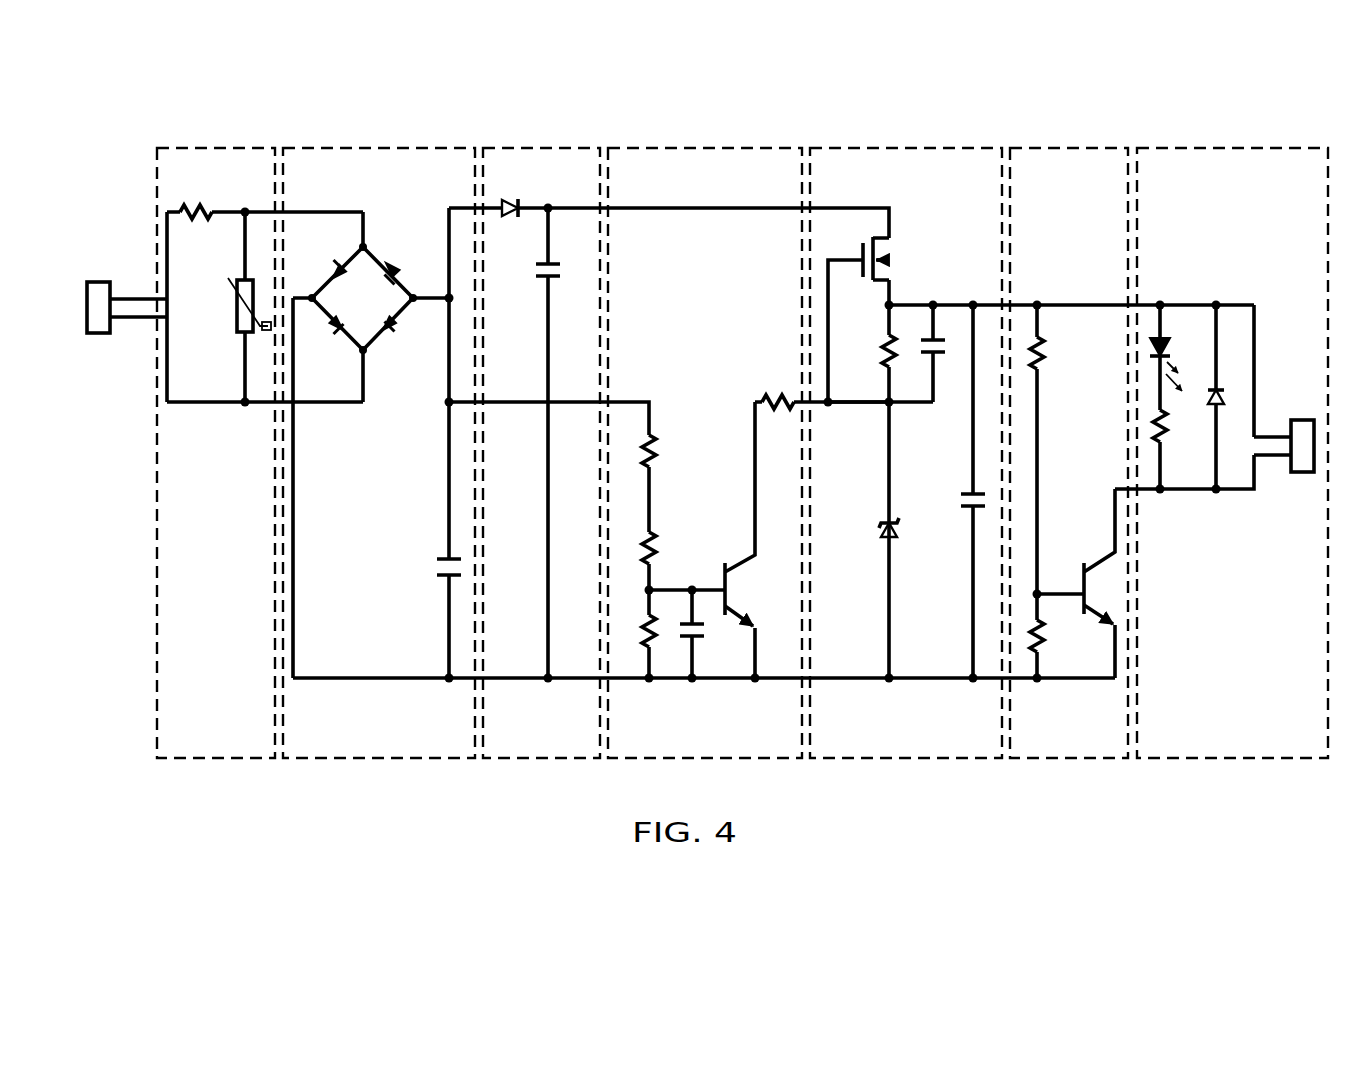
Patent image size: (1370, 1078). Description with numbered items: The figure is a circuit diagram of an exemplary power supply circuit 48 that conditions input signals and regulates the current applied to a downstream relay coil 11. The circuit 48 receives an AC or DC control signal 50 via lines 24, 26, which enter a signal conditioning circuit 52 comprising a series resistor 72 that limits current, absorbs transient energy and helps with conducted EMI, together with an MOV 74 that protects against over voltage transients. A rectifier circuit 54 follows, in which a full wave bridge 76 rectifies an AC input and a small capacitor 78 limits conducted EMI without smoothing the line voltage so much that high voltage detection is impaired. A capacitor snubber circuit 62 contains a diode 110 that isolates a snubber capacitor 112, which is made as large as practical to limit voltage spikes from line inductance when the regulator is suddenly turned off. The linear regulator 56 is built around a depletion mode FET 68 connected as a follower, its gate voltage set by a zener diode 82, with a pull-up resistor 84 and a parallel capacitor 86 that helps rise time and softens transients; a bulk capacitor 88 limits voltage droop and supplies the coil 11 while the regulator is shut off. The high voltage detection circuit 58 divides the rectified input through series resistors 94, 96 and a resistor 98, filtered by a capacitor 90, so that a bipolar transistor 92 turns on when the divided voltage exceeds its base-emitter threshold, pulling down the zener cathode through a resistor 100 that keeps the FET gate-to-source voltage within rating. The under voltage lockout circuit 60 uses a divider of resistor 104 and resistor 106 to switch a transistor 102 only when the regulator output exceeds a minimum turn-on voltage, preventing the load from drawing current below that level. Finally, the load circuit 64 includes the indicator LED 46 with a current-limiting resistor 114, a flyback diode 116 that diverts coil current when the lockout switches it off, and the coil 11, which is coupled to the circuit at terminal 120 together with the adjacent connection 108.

The relay coil 11 is at (1302, 420).
The line 24 is at (128, 296).
The line 26 is at (130, 320).
The indicator LED 46 is at (1163, 337).
The power supply circuit 48 is at (1178, 85).
The control signal 50 is at (99, 281).
The signal conditioning circuit 52 is at (220, 148).
The rectifier circuit 54 is at (383, 148).
The linear regulator 56 is at (910, 148).
The high voltage detection circuit 58 is at (718, 148).
The under voltage lockout circuit 60 is at (1075, 148).
The capacitor snubber circuit 62 is at (547, 148).
The load circuit 64 is at (1220, 148).
The depletion mode FET 68 is at (890, 242).
The resistor 72 is at (193, 210).
The MOV 74 is at (237, 302).
The full wave bridge 76 is at (375, 260).
The capacitor 78 is at (443, 571).
The zener diode 82 is at (882, 530).
The pull-up resistor 84 is at (885, 345).
The capacitor 86 is at (940, 354).
The bulk capacitor 88 is at (968, 503).
The capacitor 90 is at (696, 640).
The bipolar transistor 92 is at (740, 612).
The resistor 94 is at (652, 440).
The resistor 96 is at (653, 545).
The resistor 98 is at (652, 636).
The resistor 100 is at (768, 400).
The transistor 102 is at (1084, 572).
The resistor 104 is at (1042, 350).
The resistor 106 is at (1043, 638).
The output line 108 is at (1271, 437).
The diode 110 is at (514, 205).
The snubber capacitor 112 is at (542, 276).
The resistor 114 is at (1168, 425).
The flyback diode 116 is at (1218, 388).
The terminal 120 is at (1271, 458).